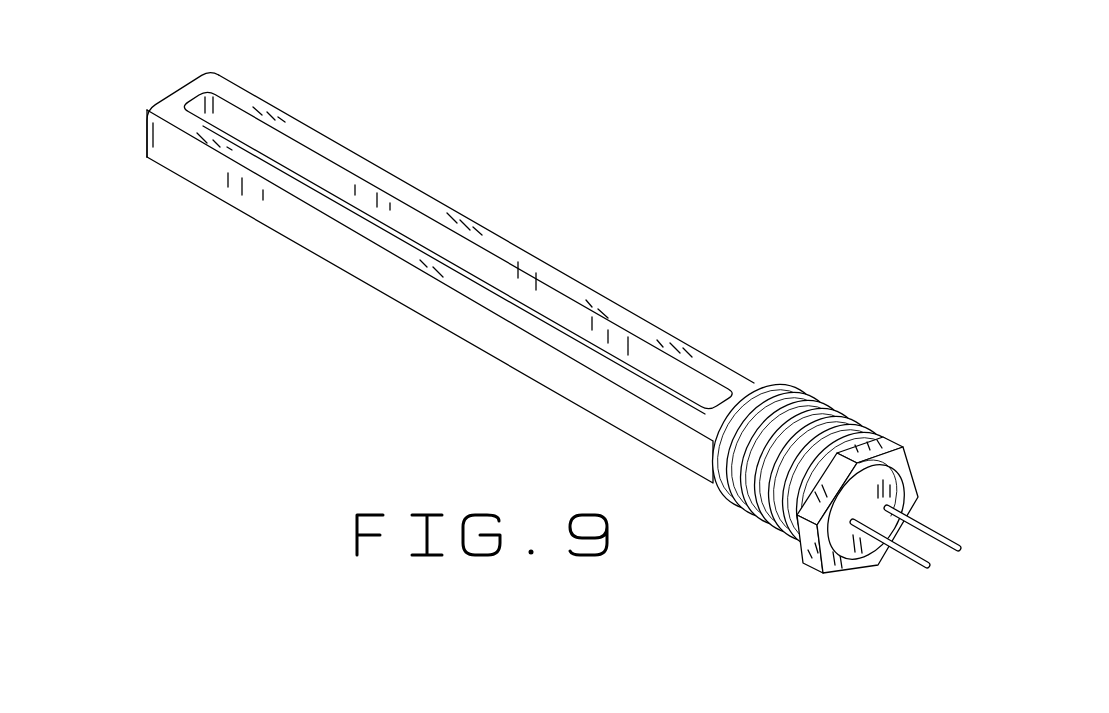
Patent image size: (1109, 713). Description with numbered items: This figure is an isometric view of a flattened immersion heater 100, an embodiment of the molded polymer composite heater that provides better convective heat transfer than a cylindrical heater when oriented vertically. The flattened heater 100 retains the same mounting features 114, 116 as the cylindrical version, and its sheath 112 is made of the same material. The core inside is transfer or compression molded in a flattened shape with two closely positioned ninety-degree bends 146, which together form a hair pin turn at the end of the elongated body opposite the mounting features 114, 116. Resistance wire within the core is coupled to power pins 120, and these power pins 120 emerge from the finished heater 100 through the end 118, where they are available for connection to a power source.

The flattened heater 100 is at (516, 322).
The sheath 112 is at (332, 138).
The mounting feature 114 is at (802, 405).
The mounting feature 116 is at (912, 467).
The end 118 is at (843, 578).
The power pins 120 is at (958, 552).
The 90° bends 146 is at (203, 70).